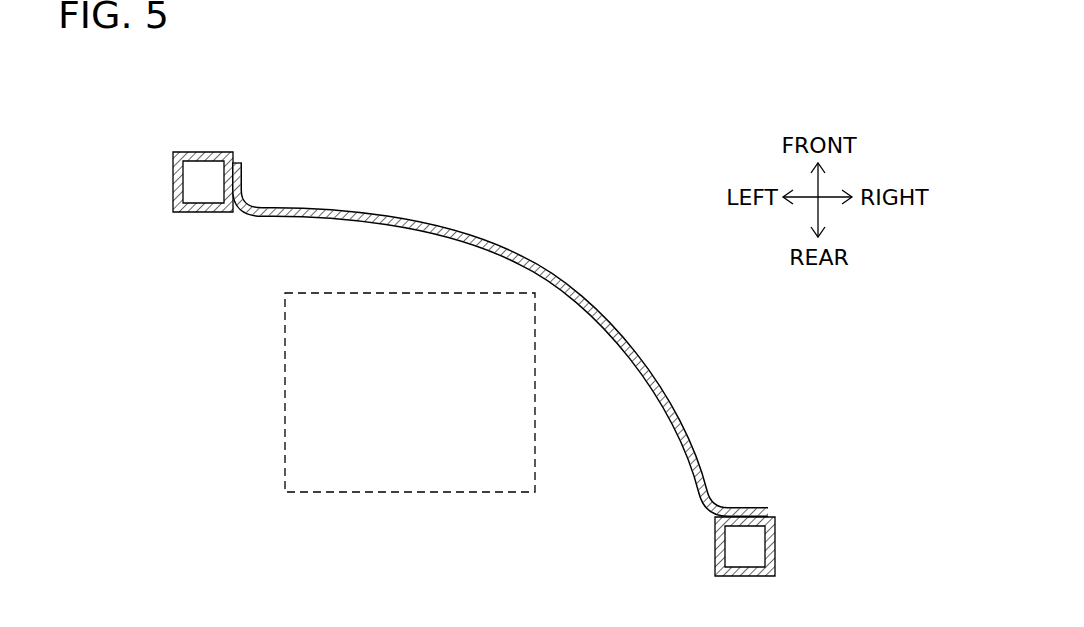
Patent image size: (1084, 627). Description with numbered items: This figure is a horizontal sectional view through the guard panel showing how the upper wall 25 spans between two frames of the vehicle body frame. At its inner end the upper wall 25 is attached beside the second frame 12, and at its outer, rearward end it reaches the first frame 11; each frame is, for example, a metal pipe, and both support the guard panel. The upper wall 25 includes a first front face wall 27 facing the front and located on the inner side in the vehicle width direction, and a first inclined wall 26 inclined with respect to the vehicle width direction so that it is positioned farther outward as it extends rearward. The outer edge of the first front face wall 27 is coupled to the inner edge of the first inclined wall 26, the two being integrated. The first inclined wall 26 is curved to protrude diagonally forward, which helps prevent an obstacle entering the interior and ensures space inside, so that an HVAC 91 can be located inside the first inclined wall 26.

The first frame 11 is at (775, 545).
The second frame 12 is at (200, 152).
The upper wall 25 is at (500, 314).
The first inclined wall 26 is at (615, 330).
The first front face wall 27 is at (307, 206).
The HVAC 91 is at (418, 494).